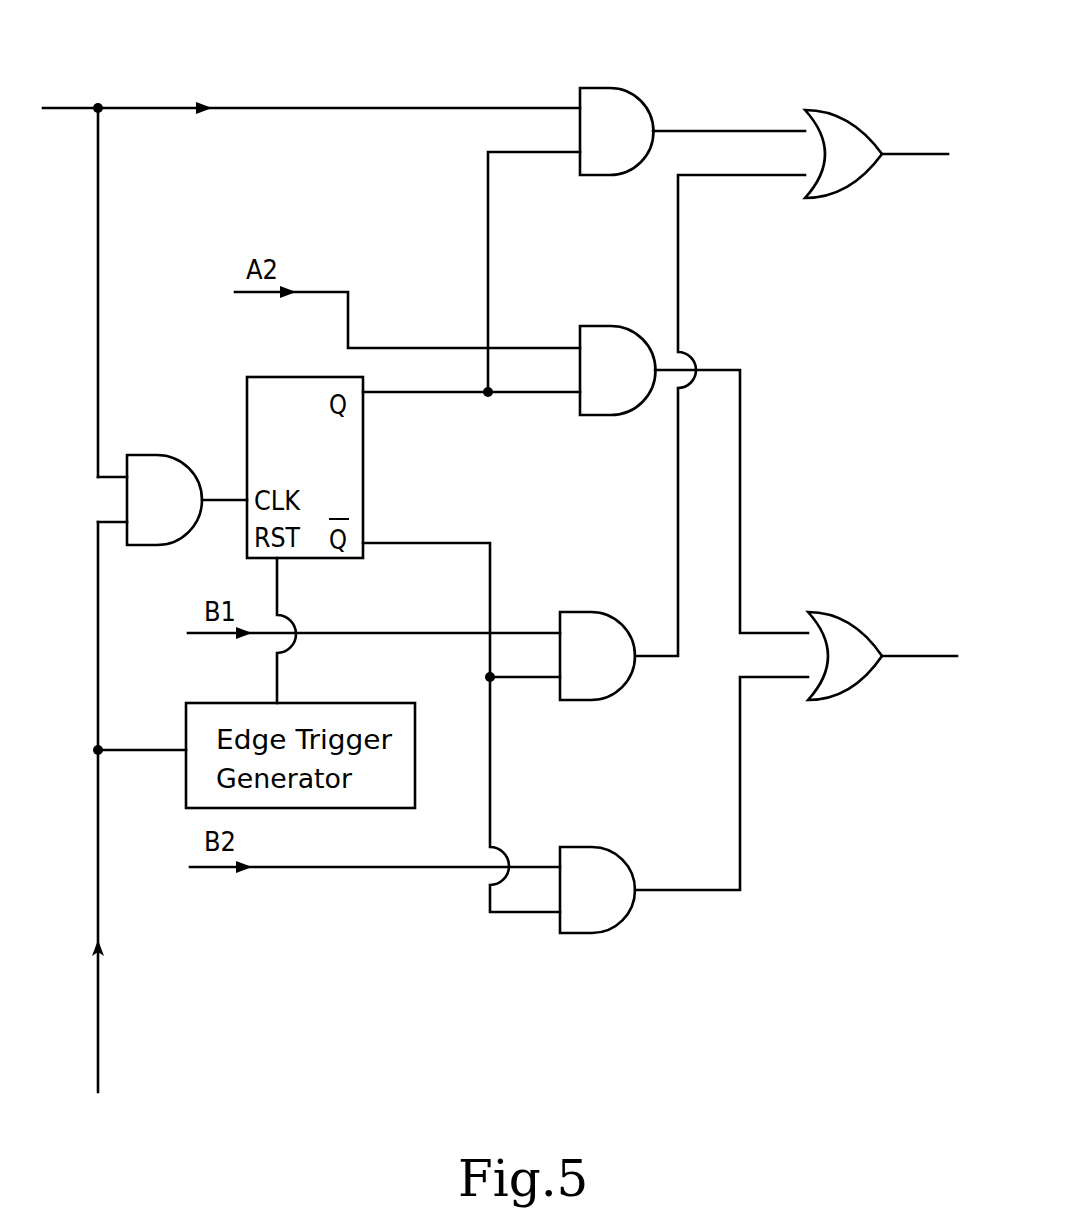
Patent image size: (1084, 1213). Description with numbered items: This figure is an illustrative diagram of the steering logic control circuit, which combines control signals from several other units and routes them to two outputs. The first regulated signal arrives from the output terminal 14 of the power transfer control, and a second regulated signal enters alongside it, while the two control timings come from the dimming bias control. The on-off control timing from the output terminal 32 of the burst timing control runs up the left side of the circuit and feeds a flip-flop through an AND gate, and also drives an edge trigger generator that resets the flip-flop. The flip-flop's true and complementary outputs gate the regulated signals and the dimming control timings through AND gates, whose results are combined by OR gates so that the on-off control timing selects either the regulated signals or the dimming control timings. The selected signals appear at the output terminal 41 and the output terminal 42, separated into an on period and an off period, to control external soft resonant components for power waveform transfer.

The output terminal 14 is at (69, 106).
The output terminal 32 is at (100, 1037).
The output terminal 41 is at (937, 158).
The output terminal 42 is at (928, 662).